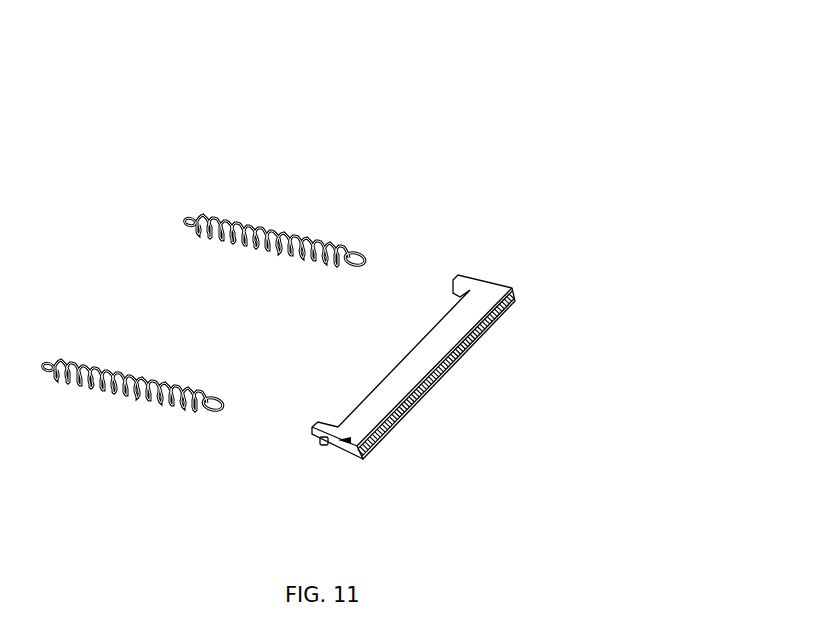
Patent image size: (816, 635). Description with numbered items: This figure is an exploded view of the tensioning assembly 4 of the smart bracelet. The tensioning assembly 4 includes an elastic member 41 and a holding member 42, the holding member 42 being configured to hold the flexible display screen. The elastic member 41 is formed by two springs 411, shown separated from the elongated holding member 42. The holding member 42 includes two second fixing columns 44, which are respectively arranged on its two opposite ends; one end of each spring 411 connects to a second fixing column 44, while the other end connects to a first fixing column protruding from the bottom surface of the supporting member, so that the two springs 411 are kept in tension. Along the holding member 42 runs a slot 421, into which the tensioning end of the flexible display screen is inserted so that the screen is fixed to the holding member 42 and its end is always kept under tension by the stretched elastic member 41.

The tensioning assembly 4 is at (526, 108).
The elastic member 41 is at (319, 190).
The spring 411 is at (137, 398).
The holding member 42 is at (530, 255).
The slot 421 is at (428, 380).
The second fixing column 44 is at (323, 447).